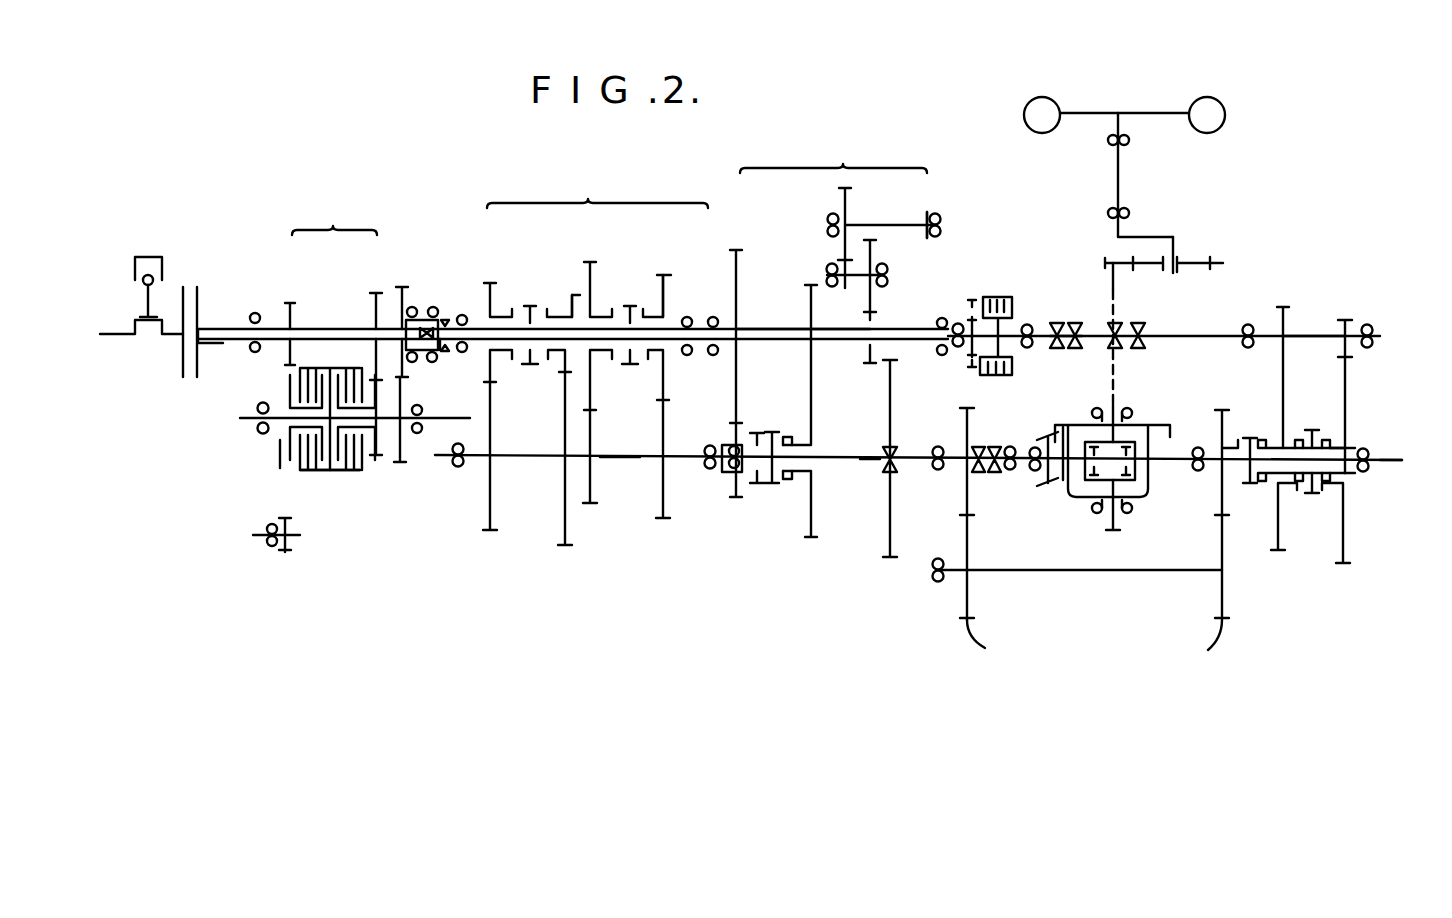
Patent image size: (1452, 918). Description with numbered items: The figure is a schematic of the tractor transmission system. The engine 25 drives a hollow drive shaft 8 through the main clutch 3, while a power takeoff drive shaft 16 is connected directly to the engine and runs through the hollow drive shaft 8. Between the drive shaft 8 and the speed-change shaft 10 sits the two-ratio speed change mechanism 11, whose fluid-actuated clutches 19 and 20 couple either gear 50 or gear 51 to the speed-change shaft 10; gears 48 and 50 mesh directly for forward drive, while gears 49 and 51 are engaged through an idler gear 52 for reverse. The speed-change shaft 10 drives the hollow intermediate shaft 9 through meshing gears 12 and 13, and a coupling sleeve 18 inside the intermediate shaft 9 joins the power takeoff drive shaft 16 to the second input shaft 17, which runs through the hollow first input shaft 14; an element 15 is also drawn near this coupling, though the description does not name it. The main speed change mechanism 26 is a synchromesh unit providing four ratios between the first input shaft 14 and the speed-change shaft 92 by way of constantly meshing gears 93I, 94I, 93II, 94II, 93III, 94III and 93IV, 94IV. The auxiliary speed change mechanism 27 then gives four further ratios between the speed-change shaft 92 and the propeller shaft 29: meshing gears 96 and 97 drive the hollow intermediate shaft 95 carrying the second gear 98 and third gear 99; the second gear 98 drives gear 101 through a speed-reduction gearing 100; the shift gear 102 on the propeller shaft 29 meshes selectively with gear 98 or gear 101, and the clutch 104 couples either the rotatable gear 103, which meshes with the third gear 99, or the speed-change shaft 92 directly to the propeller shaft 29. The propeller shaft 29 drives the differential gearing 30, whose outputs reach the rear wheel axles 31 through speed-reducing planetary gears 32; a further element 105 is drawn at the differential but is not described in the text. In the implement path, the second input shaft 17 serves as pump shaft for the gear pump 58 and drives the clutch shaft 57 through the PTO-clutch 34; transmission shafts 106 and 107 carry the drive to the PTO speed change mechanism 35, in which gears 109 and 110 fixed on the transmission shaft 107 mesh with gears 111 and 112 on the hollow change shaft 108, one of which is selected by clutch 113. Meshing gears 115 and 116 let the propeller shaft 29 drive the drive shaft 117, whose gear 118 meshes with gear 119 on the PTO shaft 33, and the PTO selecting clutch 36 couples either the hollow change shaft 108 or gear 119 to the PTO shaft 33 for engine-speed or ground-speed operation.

The main clutch 3 is at (199, 280).
The drive shaft 8 is at (233, 317).
The intermediate shaft 9 is at (424, 312).
The speed-change shaft 10 is at (273, 440).
The two-ratio speed change mechanism 11 is at (334, 211).
The meshing gear 12 is at (400, 463).
The meshing gear 13 is at (402, 287).
The first input shaft 14 is at (523, 313).
The coupling 15 is at (448, 350).
The power takeoff drive shaft 16 is at (223, 350).
The second input shaft 17 is at (603, 334).
The coupling sleeve 18 is at (425, 401).
The fluid-actuated clutch 19 is at (350, 358).
The fluid-actuated clutch 20 is at (310, 478).
The engine 25 is at (168, 250).
The main speed change mechanism 26 is at (597, 187).
The auxiliary speed change mechanism 27 is at (840, 209).
The propeller shaft 29 is at (862, 467).
The differential gearing 30 is at (1150, 500).
The rear wheel axle 31 is at (1120, 180).
The speed-reducing planetary gear 32 is at (1195, 251).
The PTO shaft 33 is at (1382, 467).
The PTO-clutch 34 is at (1005, 377).
The PTO speed change mechanism 35 is at (1360, 405).
The PTO selecting clutch 36 is at (1252, 490).
The gear 48 is at (378, 293).
The gear 49 is at (290, 303).
The gear 50 is at (373, 455).
The gear 51 is at (287, 453).
The idler gear 52 is at (285, 552).
The clutch shaft 57 is at (1035, 327).
The gear pump 58 is at (990, 290).
The speed-change shaft 92 is at (620, 458).
The constantly meshing gear 93I is at (572, 297).
The constantly meshing gear 93II is at (490, 283).
The constantly meshing gear 93III is at (670, 277).
The constantly meshing gear 93IV is at (593, 262).
The constantly meshing gear 94I is at (562, 545).
The constantly meshing gear 94II is at (485, 530).
The constantly meshing gear 94III is at (662, 520).
The constantly meshing gear 94IV is at (590, 505).
The intermediate shaft 95 is at (763, 325).
The meshing gear 96 is at (732, 493).
The meshing gear 97 is at (737, 250).
The second gear 98 is at (867, 362).
The third gear 99 is at (814, 285).
The speed-reduction gearing 100 is at (893, 244).
The gear 101 is at (922, 218).
The shift gear 102 is at (890, 557).
The gear 103 is at (810, 537).
The clutch 104 is at (757, 433).
The drive shaft 105 is at (1146, 267).
The transmission shaft 106 is at (1095, 340).
The transmission shaft 107 is at (1313, 333).
The hollow change shaft 108 is at (1337, 442).
The gear 109 is at (1348, 318).
The gear 110 is at (1283, 307).
The gear 111 is at (1343, 565).
The gear 112 is at (1280, 553).
The clutch 113 is at (1312, 430).
The meshing gear 115 is at (967, 408).
The meshing gear 116 is at (985, 648).
The drive shaft 117 is at (1065, 570).
The gear 118 is at (1208, 650).
The gear 119 is at (1226, 410).